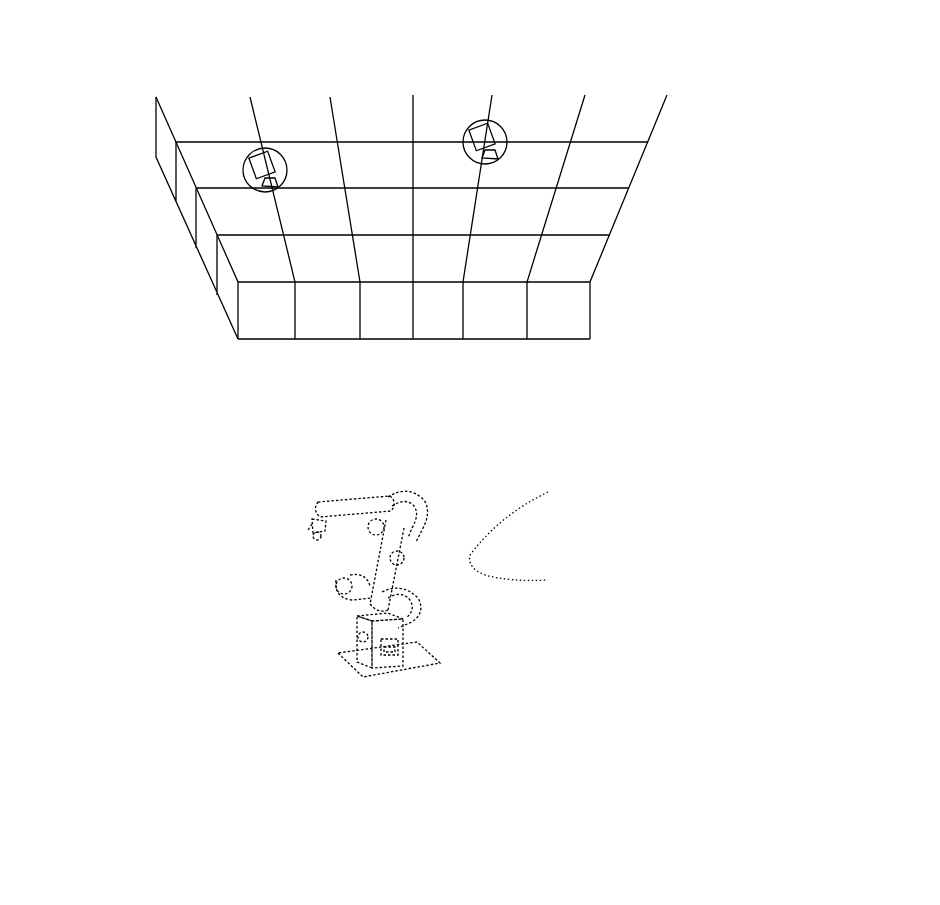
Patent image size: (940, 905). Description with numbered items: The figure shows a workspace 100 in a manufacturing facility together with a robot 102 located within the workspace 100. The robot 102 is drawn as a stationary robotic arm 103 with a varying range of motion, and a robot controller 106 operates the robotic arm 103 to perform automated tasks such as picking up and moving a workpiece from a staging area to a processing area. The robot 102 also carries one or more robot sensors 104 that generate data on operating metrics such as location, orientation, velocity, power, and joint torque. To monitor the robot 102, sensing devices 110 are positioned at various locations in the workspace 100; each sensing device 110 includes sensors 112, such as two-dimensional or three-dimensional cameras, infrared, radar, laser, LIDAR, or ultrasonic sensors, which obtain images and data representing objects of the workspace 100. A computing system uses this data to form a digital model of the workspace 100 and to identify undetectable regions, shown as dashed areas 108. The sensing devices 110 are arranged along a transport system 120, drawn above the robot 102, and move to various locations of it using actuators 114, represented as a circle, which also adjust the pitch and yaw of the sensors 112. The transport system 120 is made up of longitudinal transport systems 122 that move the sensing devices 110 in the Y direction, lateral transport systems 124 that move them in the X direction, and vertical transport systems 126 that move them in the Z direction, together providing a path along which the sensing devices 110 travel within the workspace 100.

The workspace 100 is at (818, 104).
The robot 102 is at (437, 480).
The robotic arm 103 is at (360, 498).
The robot sensors 104 is at (402, 562).
The robot controller 106 is at (383, 667).
The dashed areas 108 is at (534, 538).
The sensing devices 110 is at (241, 177).
The sensors 112 is at (271, 152).
The actuators 114 is at (253, 152).
The transport system 120 is at (674, 198).
The longitudinal transport systems 122 is at (159, 101).
The lateral transport systems 124 is at (597, 142).
The vertical transport systems 126 is at (155, 129).